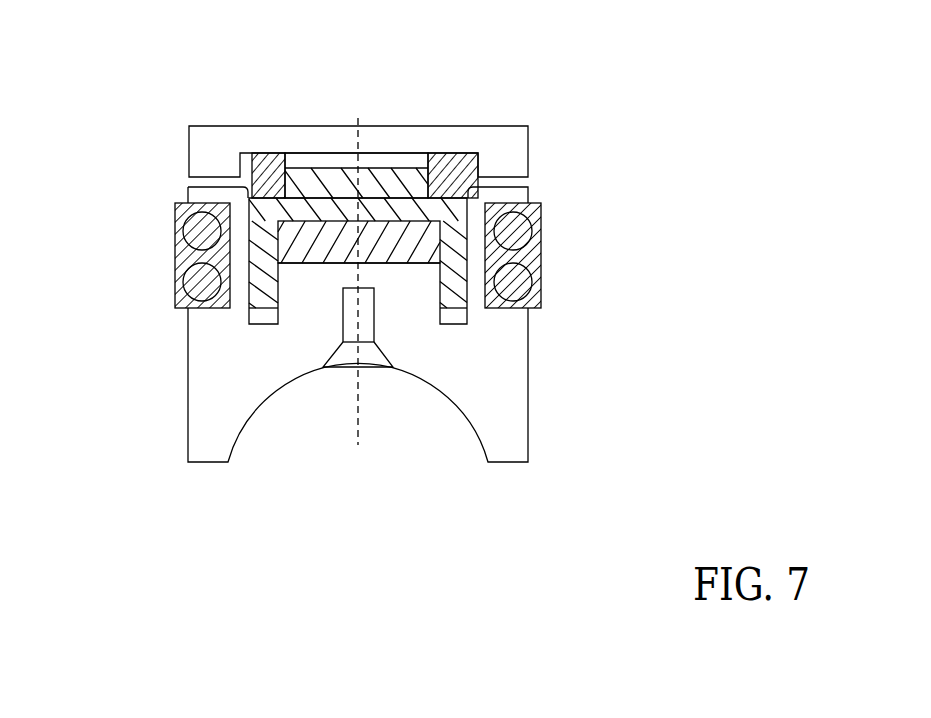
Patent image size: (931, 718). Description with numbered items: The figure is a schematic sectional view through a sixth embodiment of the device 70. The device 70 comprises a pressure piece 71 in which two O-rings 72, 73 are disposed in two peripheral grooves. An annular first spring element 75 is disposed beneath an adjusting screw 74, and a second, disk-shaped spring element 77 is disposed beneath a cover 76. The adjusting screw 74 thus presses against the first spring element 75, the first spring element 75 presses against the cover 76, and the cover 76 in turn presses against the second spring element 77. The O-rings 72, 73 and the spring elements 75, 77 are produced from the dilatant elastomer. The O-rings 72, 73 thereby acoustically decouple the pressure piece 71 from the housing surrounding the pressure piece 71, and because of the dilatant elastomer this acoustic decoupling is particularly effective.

The device 70 is at (634, 218).
The pressure piece 71 is at (493, 388).
The O-ring 72 is at (180, 237).
The O-ring 73 is at (185, 303).
The adjusting screw 74 is at (437, 150).
The first spring element 75 is at (278, 153).
The cover 76 is at (332, 200).
The second spring element 77 is at (315, 243).